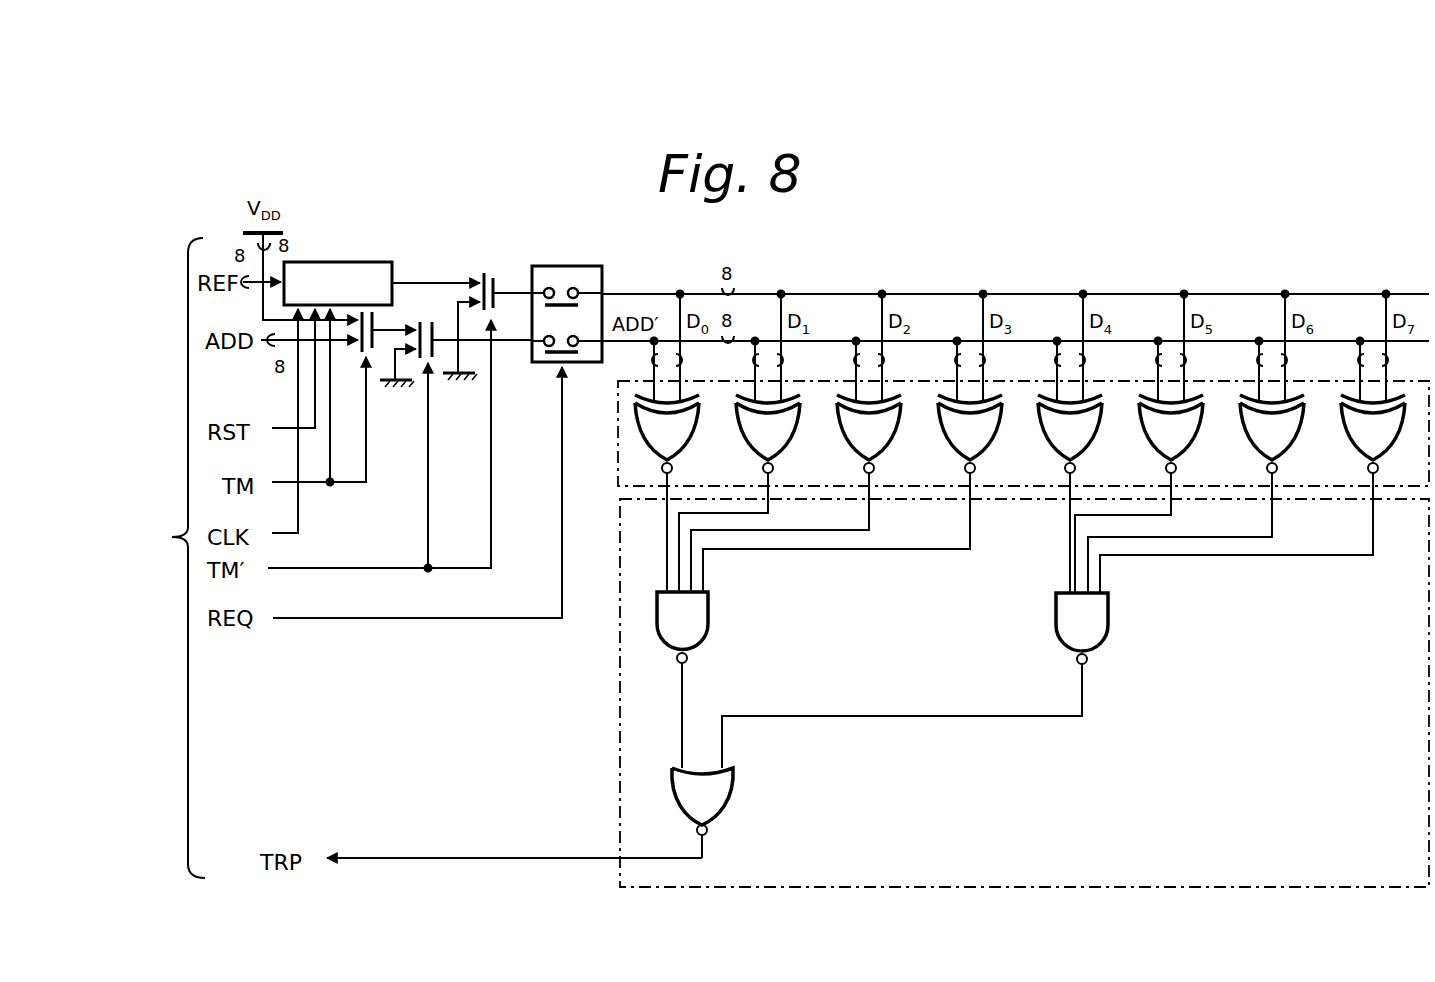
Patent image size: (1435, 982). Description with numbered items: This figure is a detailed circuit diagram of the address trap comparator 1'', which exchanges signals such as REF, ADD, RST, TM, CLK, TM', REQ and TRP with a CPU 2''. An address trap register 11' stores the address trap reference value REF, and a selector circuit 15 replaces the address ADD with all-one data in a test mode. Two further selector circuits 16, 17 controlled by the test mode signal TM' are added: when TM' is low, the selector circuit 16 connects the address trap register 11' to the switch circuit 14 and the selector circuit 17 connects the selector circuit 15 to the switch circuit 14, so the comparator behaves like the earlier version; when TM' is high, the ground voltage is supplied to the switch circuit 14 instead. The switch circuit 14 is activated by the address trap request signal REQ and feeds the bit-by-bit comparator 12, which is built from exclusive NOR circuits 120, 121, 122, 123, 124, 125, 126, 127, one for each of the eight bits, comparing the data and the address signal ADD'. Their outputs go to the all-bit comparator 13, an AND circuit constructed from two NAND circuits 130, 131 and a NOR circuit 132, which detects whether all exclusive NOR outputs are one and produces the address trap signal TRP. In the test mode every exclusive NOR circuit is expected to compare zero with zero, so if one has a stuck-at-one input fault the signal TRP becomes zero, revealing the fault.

The address trap comparator 1'' is at (1118, 232).
The CPU 2'' is at (150, 558).
The address trap register 11' is at (338, 260).
The bit-by-bit comparator 12 is at (618, 420).
The all-bit comparator 13 is at (620, 648).
The switch circuit 14 is at (556, 262).
The selector circuit 15 is at (373, 354).
The selector circuit 16 is at (485, 263).
The selector circuit 17 is at (432, 362).
The exclusive NOR circuit 120 is at (690, 440).
The exclusive NOR circuit 121 is at (791, 440).
The exclusive NOR circuit 122 is at (892, 440).
The exclusive NOR circuit 123 is at (993, 440).
The exclusive NOR circuit 124 is at (1093, 440).
The exclusive NOR circuit 125 is at (1194, 440).
The exclusive NOR circuit 126 is at (1295, 440).
The exclusive NOR circuit 127 is at (1398, 440).
The NAND circuit 130 is at (712, 623).
The NAND circuit 131 is at (1112, 623).
The NOR circuit 132 is at (733, 790).